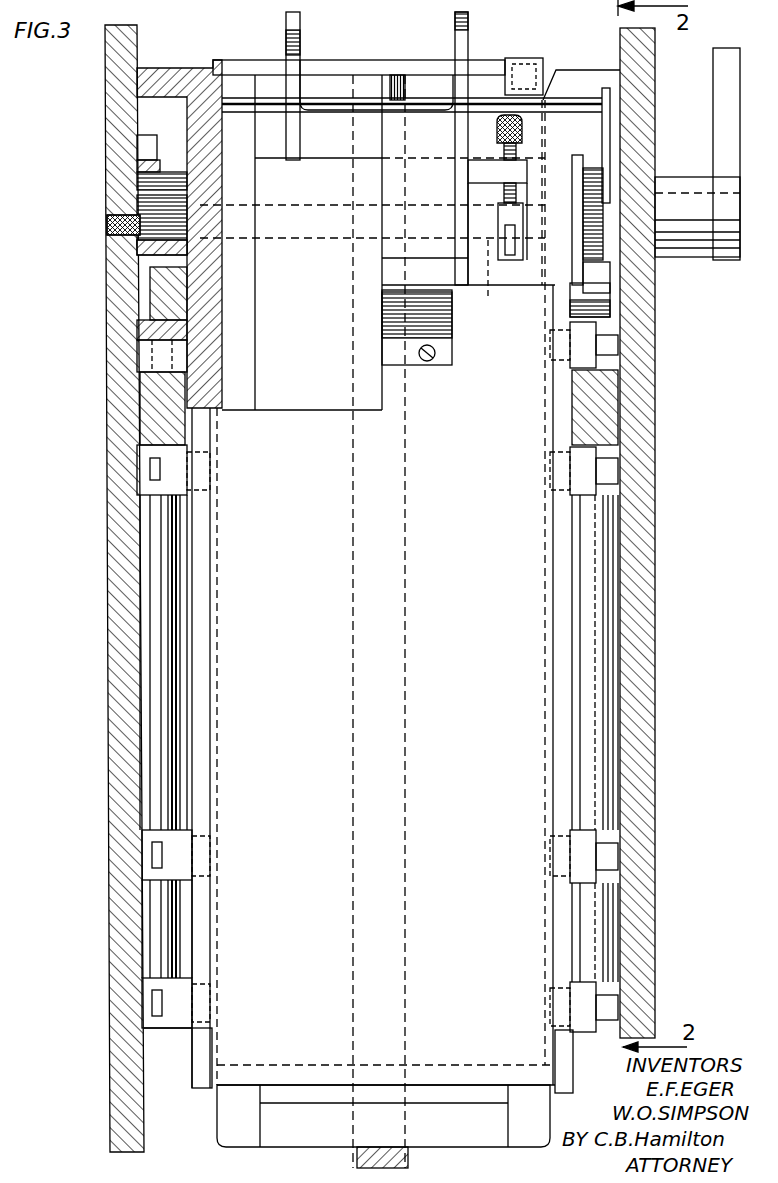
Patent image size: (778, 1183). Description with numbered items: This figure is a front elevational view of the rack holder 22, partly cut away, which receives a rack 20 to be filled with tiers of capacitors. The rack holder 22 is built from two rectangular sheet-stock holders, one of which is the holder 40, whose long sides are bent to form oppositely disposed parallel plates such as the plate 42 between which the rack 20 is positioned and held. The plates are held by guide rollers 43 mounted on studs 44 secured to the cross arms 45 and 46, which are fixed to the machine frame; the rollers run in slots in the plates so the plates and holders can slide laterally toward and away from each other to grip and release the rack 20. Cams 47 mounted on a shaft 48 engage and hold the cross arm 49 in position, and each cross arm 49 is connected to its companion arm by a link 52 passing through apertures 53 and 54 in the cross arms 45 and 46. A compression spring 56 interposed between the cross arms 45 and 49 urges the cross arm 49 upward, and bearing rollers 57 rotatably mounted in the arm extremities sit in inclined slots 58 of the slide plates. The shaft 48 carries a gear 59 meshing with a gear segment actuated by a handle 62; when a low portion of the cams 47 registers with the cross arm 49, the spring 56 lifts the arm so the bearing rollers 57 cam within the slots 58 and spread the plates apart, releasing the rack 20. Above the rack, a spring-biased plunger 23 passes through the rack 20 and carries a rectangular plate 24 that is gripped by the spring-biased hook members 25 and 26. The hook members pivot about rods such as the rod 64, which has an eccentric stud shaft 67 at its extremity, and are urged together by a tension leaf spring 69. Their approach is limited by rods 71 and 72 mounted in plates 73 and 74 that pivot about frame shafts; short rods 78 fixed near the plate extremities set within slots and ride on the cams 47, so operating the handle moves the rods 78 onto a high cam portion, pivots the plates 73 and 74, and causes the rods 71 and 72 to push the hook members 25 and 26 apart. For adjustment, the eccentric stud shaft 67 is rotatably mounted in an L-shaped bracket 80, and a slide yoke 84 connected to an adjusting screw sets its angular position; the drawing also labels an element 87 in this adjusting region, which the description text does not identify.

The rack 20 is at (320, 1135).
The rack holder 22 is at (630, 644).
The spring-biased plunger 23 is at (360, 86).
The rectangular plate 24 is at (392, 75).
The spring-biased hook member 25 is at (455, 20).
The spring-biased hook member 26 is at (300, 20).
The rectangular-shaped holder 40 is at (520, 768).
The parallel plate 42 is at (200, 1072).
The guide roller 43 is at (552, 482).
The stud 44 is at (548, 452).
The cross arm 45 is at (175, 500).
The cross arm 46 is at (187, 882).
The cam 47 is at (590, 295).
The shaft 48 is at (110, 235).
The cross arm 49 is at (605, 362).
The link 52 is at (160, 725).
The aperture 53 is at (160, 505).
The aperture 54 is at (150, 820).
The compression spring 56 is at (600, 418).
The bearing roller 57 is at (552, 340).
The inclined slot 58 is at (545, 305).
The gear 59 is at (595, 218).
The handle 62 is at (725, 150).
The rod 64 is at (490, 288).
The eccentric stud shaft 67 is at (527, 262).
The tension leaf spring 69 is at (412, 348).
The rod 71 is at (345, 104).
The rod 72 is at (480, 105).
The plate 73 is at (610, 120).
The plate 74 is at (145, 145).
The short rod 78 is at (583, 167).
The L-shaped bracket 80 is at (480, 178).
The slide yoke 84 is at (505, 222).
The knurled knob 87 is at (522, 128).